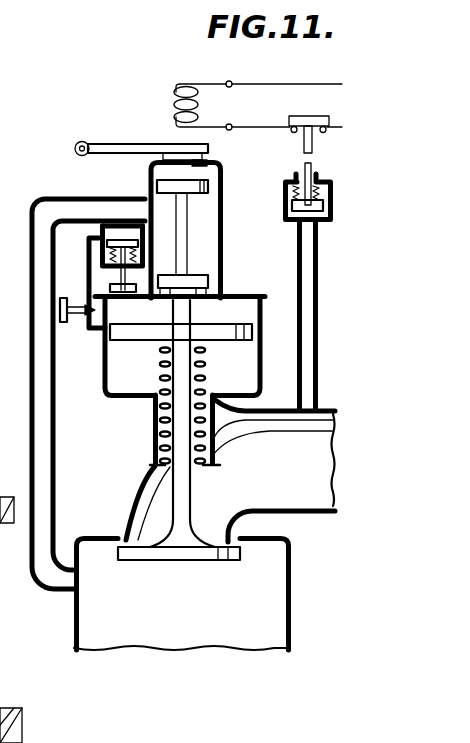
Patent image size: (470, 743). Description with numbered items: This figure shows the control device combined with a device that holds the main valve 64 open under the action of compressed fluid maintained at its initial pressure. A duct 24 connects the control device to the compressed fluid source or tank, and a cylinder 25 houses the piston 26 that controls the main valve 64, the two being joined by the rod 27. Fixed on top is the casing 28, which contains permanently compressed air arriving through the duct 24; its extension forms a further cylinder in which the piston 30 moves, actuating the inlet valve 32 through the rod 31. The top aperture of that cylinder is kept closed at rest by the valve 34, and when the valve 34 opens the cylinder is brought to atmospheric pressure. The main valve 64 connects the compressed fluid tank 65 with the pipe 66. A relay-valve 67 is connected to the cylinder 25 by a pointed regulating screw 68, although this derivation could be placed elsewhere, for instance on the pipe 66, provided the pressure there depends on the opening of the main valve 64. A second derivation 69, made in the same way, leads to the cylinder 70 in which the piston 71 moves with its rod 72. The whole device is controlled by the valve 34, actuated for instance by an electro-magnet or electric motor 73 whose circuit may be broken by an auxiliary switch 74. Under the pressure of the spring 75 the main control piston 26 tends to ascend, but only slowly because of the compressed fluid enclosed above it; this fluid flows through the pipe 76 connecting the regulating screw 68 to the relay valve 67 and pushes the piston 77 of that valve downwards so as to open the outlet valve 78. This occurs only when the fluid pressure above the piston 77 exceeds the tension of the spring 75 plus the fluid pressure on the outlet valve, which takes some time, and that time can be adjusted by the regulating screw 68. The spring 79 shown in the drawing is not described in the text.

The duct 24 is at (55, 432).
The cylinder 25 is at (103, 383).
The piston 26 is at (250, 332).
The rod 27 is at (182, 369).
The casing 28 is at (212, 257).
The piston 30 is at (214, 161).
The rod 31 is at (183, 233).
The inlet valve 32 is at (212, 280).
The valve 34 is at (172, 145).
The main valve 64 is at (152, 561).
The compressed fluid tank 65 is at (98, 545).
The pipe 66 is at (302, 440).
The relay-valve 67 is at (128, 240).
The pointed regulating screw 68 is at (80, 313).
The second derivation 69 is at (318, 297).
The cylinder 70 is at (333, 218).
The piston 71 is at (335, 200).
The rod 72 is at (313, 168).
The electro-magnet or electric motor 73 is at (175, 98).
The auxiliary switch 74 is at (316, 116).
The spring 75 is at (155, 426).
The pipe 76 is at (92, 275).
The piston 77 is at (101, 237).
The outlet valve 78 is at (127, 298).
The spring 79 is at (107, 250).